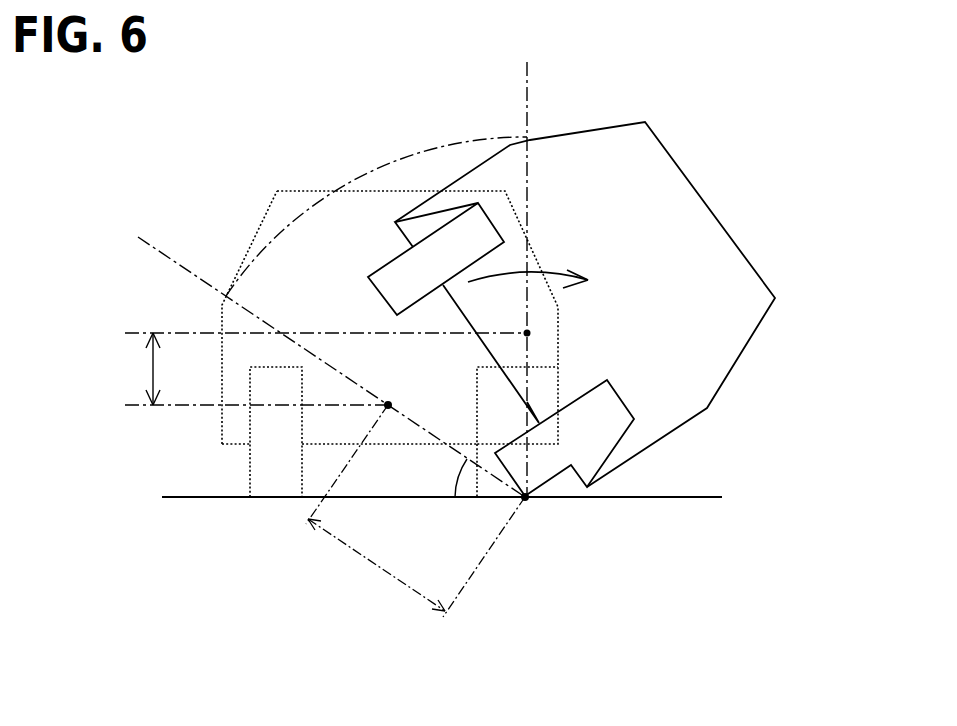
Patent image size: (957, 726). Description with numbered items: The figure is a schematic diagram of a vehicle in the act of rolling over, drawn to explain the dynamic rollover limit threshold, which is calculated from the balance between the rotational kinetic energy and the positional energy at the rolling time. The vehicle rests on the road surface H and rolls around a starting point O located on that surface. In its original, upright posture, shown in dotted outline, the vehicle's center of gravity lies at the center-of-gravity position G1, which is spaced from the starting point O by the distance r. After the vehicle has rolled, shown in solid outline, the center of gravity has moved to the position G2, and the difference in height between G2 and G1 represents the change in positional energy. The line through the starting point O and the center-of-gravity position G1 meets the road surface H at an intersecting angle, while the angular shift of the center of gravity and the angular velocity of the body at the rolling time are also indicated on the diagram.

The center-of-gravity position before rolling G1 is at (277, 390).
The center-of-gravity position after rolling G2 is at (349, 336).
The road surface H is at (431, 497).
The starting point O is at (539, 514).
The distance from the starting point to the center of gravity r is at (415, 511).